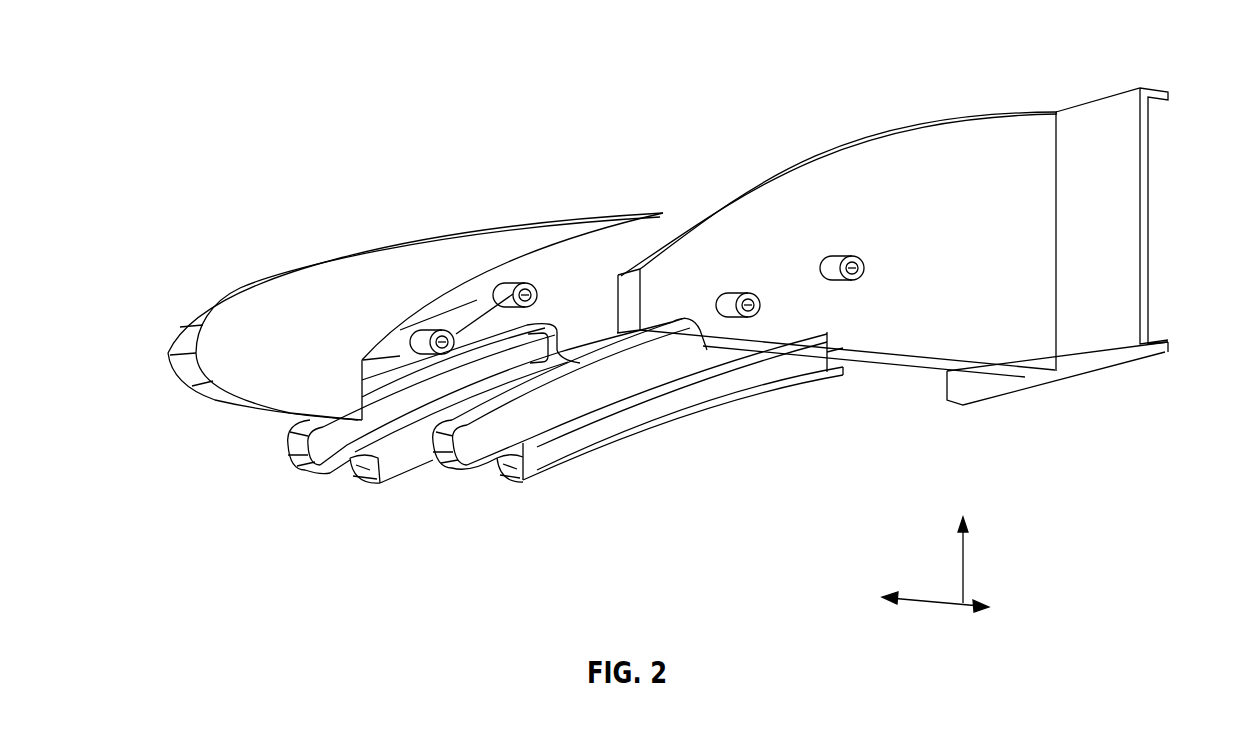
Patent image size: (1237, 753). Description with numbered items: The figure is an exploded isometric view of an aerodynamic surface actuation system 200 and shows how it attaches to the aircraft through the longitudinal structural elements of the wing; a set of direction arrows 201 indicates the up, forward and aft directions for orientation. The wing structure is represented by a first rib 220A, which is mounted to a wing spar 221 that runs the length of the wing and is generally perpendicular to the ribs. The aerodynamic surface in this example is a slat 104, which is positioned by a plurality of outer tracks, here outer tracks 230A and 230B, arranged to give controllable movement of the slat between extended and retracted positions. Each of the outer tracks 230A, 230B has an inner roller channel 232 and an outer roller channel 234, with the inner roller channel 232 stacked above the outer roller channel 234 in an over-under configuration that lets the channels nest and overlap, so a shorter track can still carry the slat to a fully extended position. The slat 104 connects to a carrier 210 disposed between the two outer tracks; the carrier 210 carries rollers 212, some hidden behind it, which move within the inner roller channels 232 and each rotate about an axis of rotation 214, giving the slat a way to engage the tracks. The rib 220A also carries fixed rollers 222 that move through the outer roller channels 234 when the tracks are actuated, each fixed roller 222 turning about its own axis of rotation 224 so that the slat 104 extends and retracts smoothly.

The slat 104 is at (277, 272).
The aerodynamic surface actuation system 200 is at (408, 88).
The coordinate system 201 is at (924, 558).
The carrier 210 is at (483, 300).
The rollers 212 is at (425, 323).
The axis of rotation 214 is at (486, 338).
The first rib 220A is at (790, 173).
The wing spar 221 is at (1100, 97).
The fixed rollers 222 is at (737, 292).
The axis of rotation 224 is at (830, 305).
The outer track 230A is at (398, 483).
The outer track 230B is at (540, 483).
The inner roller channel 232 is at (341, 468).
The outer roller channel 234 is at (642, 410).